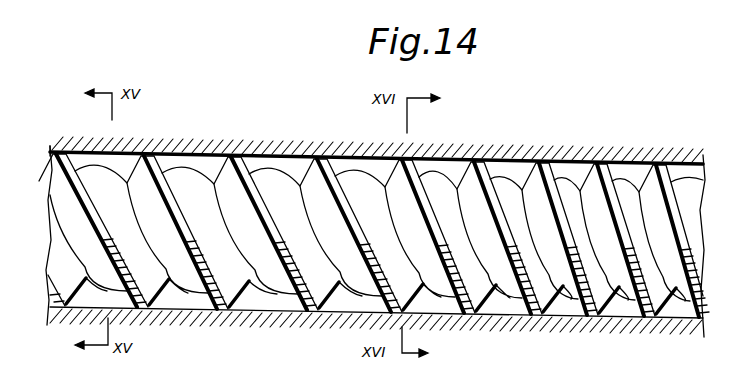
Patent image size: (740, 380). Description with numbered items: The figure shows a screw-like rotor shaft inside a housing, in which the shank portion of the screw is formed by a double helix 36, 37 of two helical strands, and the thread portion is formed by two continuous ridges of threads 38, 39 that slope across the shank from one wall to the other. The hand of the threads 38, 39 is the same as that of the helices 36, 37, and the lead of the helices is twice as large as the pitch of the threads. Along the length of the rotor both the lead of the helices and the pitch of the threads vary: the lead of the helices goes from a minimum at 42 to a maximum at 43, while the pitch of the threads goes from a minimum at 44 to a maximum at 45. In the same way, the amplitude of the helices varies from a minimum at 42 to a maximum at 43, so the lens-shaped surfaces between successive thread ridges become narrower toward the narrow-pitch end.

The helix 36 is at (180, 180).
The helix 37 is at (92, 185).
The thread 38 is at (152, 310).
The thread 39 is at (222, 310).
The minimum lead location 42 is at (427, 268).
The maximum lead location 43 is at (60, 182).
The minimum thread pitch location 44 is at (660, 318).
The maximum thread pitch location 45 is at (58, 306).